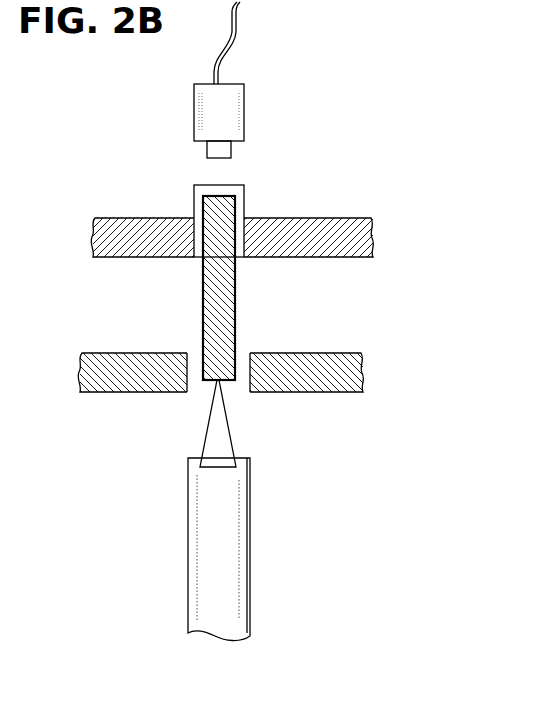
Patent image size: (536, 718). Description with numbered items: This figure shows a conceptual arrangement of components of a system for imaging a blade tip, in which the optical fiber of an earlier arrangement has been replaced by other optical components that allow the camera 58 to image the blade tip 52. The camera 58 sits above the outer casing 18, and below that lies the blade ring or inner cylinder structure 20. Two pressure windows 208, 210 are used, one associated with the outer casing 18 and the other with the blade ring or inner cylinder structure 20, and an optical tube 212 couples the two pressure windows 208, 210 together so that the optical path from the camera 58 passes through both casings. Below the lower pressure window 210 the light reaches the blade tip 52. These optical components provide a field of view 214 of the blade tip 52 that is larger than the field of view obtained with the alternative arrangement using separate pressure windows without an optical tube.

The camera 58 is at (235, 112).
The pressure window 208 is at (245, 193).
The outer casing 18 is at (333, 218).
The optical tube 212 is at (236, 300).
The blade ring or inner cylinder structure 20 is at (292, 392).
The pressure window 210 is at (196, 393).
The field of view 214 is at (215, 441).
The blade tip 52 is at (243, 460).